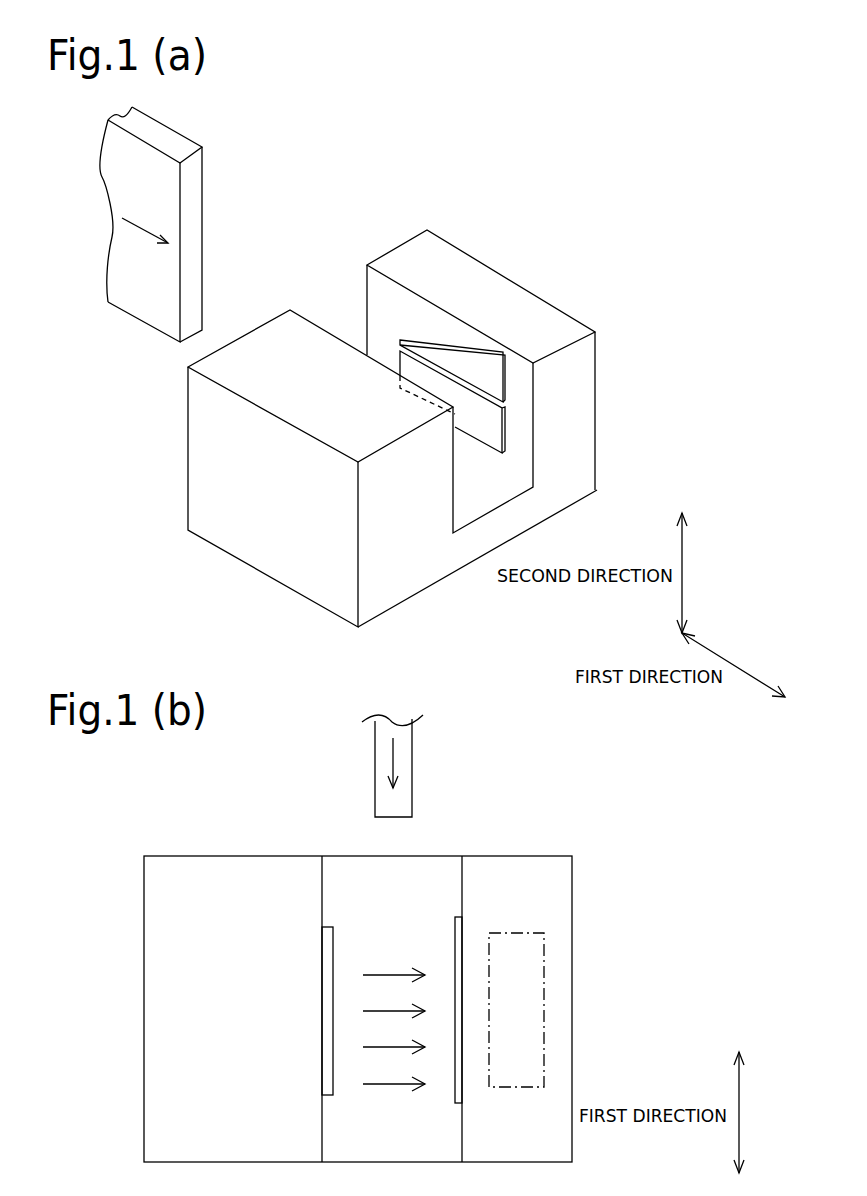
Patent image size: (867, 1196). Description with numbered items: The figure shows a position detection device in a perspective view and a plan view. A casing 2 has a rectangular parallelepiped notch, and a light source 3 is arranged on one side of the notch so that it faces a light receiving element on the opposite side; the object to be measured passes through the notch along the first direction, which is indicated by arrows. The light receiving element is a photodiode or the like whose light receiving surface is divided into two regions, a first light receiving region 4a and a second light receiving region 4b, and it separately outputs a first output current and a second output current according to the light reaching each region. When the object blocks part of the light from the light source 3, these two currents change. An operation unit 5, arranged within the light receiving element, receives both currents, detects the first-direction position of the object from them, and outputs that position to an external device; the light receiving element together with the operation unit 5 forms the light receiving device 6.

The casing 2 is at (488, 280).
The light source 3 is at (320, 945).
The first light receiving region 4a is at (505, 380).
The second light receiving region 4b is at (505, 427).
The operation unit 5 is at (544, 955).
The light receiving device 6 is at (578, 1007).